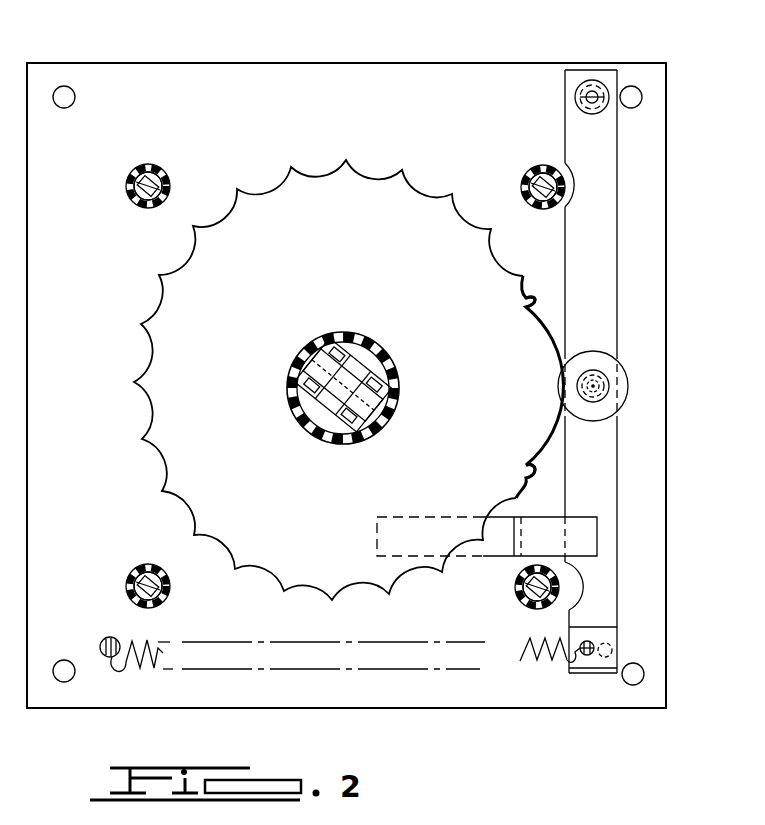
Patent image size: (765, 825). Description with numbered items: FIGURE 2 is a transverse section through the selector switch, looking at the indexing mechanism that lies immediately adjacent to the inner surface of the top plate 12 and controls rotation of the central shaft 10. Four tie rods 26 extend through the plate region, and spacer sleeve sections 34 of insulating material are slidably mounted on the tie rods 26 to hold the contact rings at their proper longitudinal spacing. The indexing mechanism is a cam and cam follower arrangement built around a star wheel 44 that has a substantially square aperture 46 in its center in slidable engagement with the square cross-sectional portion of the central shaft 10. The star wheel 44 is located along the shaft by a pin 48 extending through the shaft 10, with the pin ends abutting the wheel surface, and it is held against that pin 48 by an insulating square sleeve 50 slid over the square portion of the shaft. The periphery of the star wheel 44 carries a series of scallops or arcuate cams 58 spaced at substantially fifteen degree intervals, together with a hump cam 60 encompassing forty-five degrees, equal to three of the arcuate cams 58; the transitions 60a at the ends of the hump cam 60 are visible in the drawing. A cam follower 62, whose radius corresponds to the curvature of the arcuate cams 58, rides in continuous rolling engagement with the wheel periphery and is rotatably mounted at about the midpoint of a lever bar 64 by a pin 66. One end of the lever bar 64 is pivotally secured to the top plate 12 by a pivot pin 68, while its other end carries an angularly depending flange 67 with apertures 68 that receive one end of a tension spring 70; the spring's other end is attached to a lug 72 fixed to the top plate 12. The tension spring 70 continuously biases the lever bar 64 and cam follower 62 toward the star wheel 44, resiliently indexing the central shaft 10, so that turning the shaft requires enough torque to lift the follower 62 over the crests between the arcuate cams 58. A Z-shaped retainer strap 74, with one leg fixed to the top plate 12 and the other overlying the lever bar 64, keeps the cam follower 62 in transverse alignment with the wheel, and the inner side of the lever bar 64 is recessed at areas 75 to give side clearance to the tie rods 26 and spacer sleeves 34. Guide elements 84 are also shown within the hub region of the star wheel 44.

The central shaft 10 is at (292, 382).
The top plate 12 is at (418, 75).
The tie rods 26 is at (162, 172).
The spacer sleeve sections 34 is at (140, 172).
The star wheel 44 is at (163, 425).
The square aperture 46 is at (388, 370).
The pin 48 is at (305, 414).
The square sleeve 50 is at (370, 340).
The arcuate cams 58 is at (262, 196).
The hump cam 60 is at (553, 373).
The notch 60a is at (523, 304).
The cam follower 62 is at (605, 412).
The lever bar 64 is at (564, 257).
The pin 66 is at (599, 370).
The angularly depending flange 67 is at (598, 633).
The pivot pin 68 is at (577, 95).
The tension spring 70 is at (537, 676).
The lug 72 is at (100, 646).
The Z-shaped retainer strap 74 is at (472, 548).
The recessed areas 75 is at (576, 190).
The guide rails 84 is at (331, 337).